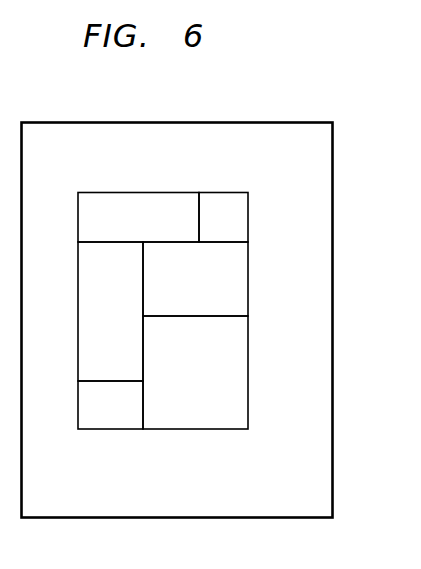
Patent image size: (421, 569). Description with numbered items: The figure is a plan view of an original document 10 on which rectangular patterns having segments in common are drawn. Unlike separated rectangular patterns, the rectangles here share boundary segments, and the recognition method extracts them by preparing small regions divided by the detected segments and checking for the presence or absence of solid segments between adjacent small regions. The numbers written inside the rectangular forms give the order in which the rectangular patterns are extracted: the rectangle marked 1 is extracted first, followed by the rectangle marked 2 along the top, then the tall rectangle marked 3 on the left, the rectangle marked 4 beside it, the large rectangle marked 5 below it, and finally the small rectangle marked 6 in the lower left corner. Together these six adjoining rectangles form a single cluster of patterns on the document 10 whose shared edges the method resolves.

The card body 10 is at (333, 143).
The area 1 is at (138, 218).
The area 2 is at (223, 218).
The area 3 is at (110, 311).
The area 4 is at (195, 279).
The area 5 is at (195, 372).
The area 6 is at (110, 405).